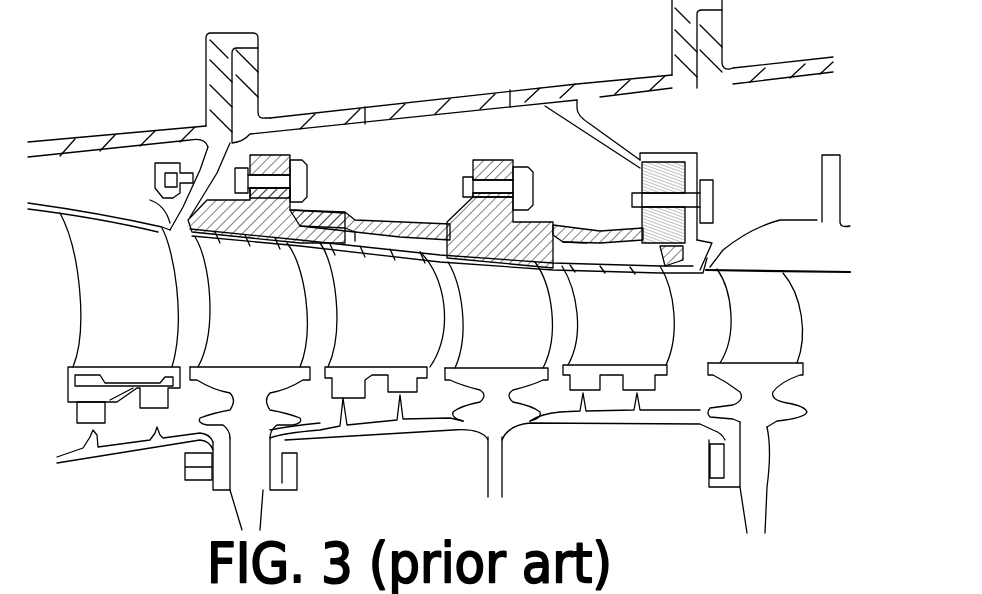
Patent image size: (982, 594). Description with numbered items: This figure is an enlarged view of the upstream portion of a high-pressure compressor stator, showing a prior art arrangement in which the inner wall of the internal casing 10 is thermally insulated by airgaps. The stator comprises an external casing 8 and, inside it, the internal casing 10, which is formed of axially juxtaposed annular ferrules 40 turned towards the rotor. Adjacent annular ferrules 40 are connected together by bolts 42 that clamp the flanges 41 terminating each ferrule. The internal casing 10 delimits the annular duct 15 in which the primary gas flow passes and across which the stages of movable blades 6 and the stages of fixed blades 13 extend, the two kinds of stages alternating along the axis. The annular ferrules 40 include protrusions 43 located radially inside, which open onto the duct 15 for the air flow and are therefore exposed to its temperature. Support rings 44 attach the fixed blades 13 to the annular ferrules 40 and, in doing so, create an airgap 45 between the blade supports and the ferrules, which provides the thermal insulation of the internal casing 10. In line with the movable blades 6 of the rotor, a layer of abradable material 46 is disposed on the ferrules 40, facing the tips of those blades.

The movable blades 6 is at (293, 306).
The external casing 8 is at (590, 133).
The internal casing 10 is at (322, 172).
The fixed blades 13 is at (417, 305).
The annular duct 15 is at (708, 403).
The annular ferrules 40 is at (415, 216).
The flanges 41 is at (272, 160).
The bolts 42 is at (718, 180).
The protrusions 43 is at (205, 165).
The support rings 44 is at (388, 222).
The airgap 45 is at (370, 210).
The layer of abradable material 46 is at (242, 240).